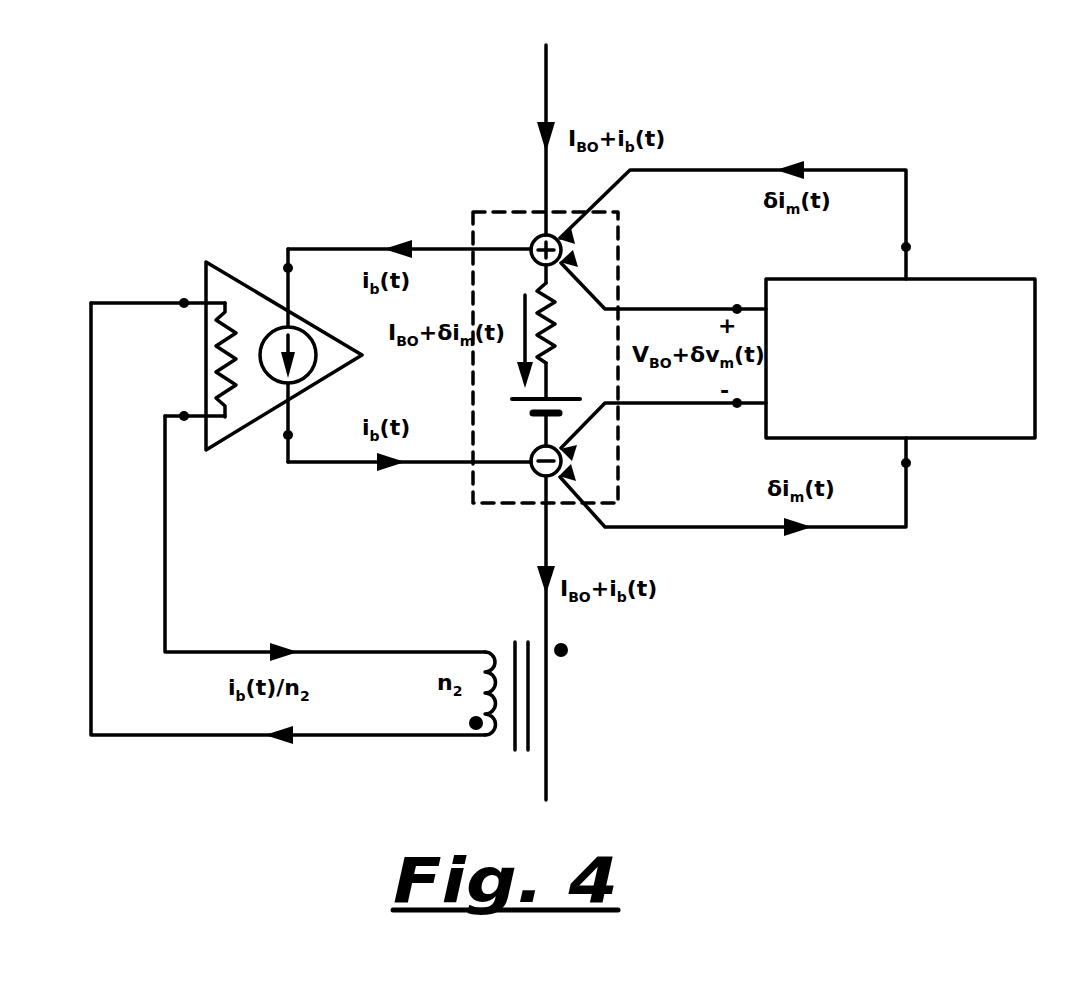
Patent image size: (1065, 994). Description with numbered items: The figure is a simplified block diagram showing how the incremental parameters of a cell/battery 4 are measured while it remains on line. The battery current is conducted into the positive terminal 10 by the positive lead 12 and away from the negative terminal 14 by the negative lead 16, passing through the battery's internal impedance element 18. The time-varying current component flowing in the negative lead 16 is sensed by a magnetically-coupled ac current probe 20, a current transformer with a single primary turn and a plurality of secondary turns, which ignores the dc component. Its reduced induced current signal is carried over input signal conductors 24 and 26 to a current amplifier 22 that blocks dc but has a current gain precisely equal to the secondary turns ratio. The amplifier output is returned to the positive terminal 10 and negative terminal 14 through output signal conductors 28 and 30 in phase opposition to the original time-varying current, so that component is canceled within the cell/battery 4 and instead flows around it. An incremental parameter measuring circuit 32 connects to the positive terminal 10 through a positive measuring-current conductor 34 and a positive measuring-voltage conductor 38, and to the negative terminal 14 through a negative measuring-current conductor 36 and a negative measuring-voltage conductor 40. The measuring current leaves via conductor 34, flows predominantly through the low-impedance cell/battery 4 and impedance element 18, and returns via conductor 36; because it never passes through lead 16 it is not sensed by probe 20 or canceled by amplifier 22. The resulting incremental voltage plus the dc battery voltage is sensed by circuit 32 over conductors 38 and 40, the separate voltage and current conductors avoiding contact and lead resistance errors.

The cell/battery 4 is at (473, 228).
The positive terminal 10 is at (533, 245).
The positive lead 12 is at (546, 95).
The negative terminal 14 is at (538, 478).
The negative lead 16 is at (547, 756).
The internal impedance element 18 is at (558, 312).
The ac current probe 20 is at (500, 640).
The current amplifier 22 is at (260, 292).
The input signal conductor 24 is at (91, 555).
The input signal conductor 26 is at (165, 585).
The output signal conductor 28 is at (360, 247).
The output signal conductor 30 is at (345, 465).
The incremental parameter measuring circuit 32 is at (955, 279).
The positive measuring-current conductor 34 is at (838, 170).
The negative measuring-current conductor 36 is at (862, 527).
The positive measuring-voltage conductor 38 is at (645, 309).
The negative measuring-voltage conductor 40 is at (645, 403).